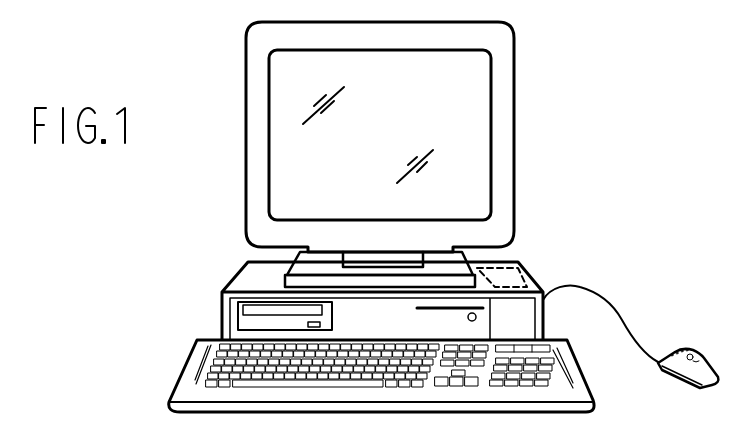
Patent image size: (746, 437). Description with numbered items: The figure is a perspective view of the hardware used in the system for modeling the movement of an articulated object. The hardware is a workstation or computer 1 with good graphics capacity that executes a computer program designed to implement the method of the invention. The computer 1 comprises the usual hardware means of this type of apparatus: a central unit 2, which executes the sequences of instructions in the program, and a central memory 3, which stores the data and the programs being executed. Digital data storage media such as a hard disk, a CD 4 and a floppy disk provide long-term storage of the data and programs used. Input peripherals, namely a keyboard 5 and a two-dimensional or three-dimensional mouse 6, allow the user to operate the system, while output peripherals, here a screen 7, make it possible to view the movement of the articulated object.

The computer 1 is at (601, 114).
The central unit 2 is at (245, 282).
The central memory 3 is at (522, 266).
The CD 4 is at (257, 312).
The keyboard 5 is at (593, 387).
The mouse 6 is at (690, 354).
The screen 7 is at (256, 123).